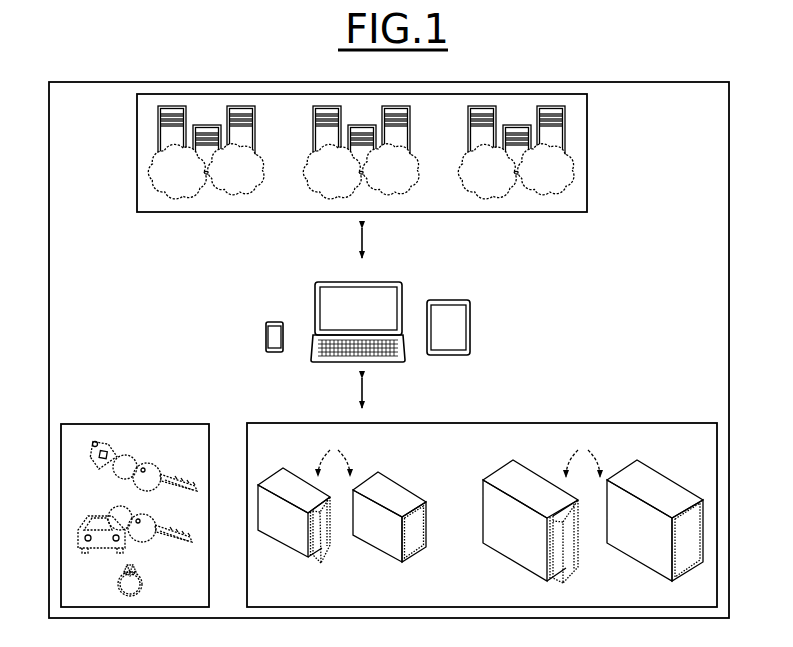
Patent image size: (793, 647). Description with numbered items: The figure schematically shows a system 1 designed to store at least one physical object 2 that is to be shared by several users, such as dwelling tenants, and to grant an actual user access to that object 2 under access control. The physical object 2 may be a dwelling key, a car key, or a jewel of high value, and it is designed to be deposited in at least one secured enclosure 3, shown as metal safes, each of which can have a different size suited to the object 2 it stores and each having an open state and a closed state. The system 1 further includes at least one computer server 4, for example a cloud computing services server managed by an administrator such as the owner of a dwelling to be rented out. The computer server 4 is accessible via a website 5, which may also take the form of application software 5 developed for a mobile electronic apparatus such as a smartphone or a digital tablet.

The system 1 is at (733, 348).
The physical object 2 is at (58, 512).
The secured enclosure 3 is at (721, 513).
The computer server 4 is at (590, 150).
The website 5 is at (493, 320).